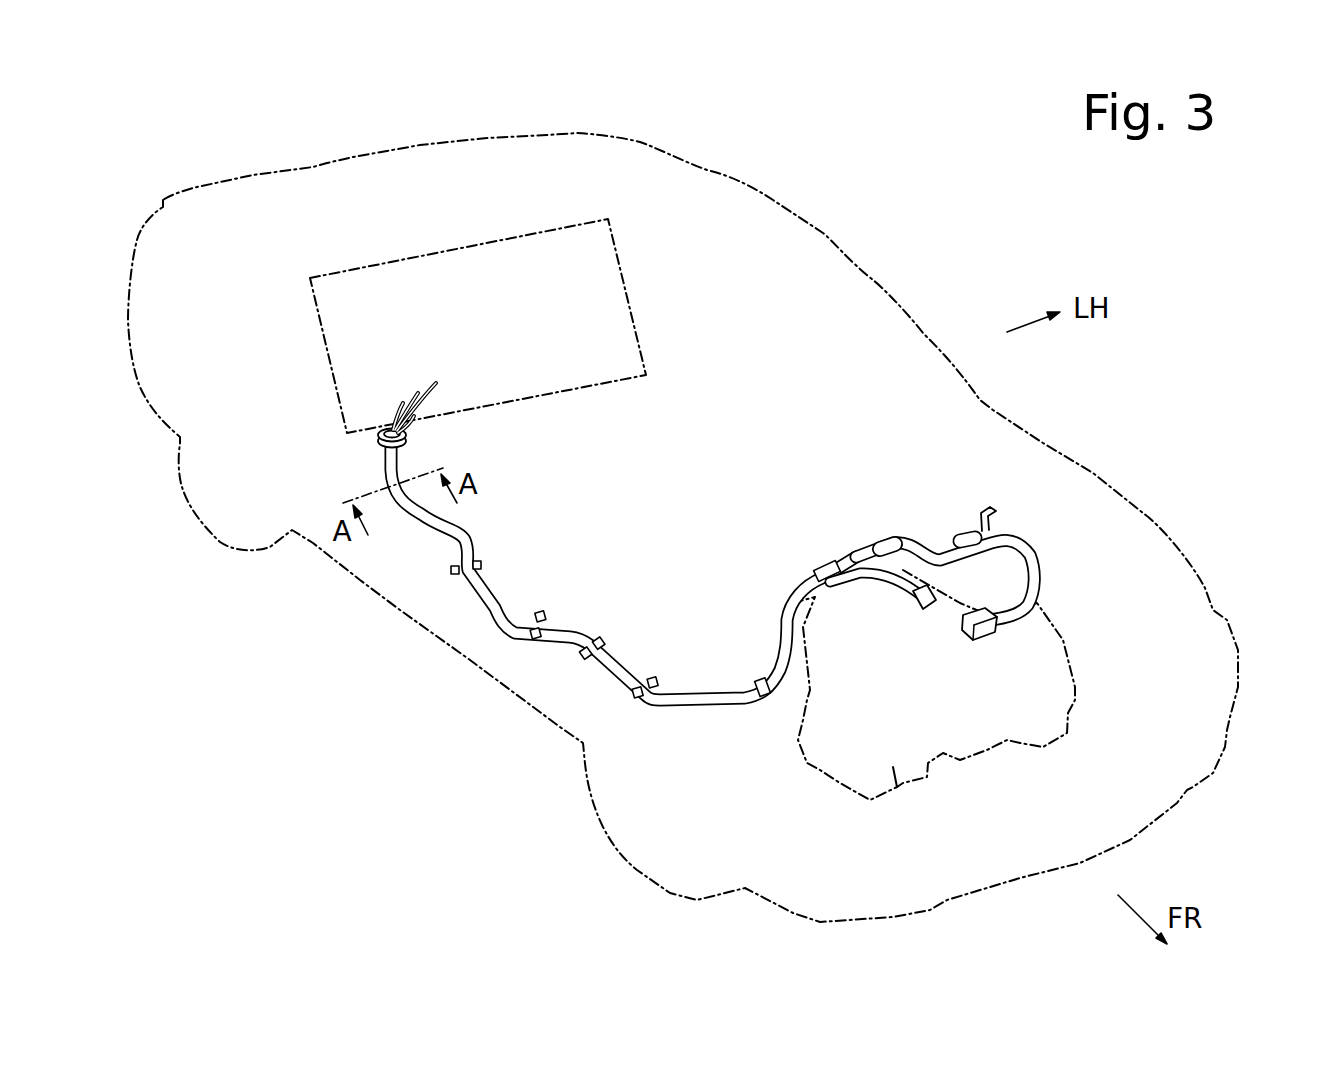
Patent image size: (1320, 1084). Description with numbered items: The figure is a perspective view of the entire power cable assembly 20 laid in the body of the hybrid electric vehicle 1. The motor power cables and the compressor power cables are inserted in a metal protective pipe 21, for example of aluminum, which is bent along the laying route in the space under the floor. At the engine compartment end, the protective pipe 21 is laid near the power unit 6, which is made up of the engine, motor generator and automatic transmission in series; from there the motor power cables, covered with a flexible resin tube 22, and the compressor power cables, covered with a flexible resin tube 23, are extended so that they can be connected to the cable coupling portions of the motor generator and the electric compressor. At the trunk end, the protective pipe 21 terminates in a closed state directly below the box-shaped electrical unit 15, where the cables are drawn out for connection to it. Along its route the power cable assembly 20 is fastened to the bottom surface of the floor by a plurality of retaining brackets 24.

The hybrid electric vehicle 1 is at (852, 206).
The electrical unit 15 is at (552, 226).
The power unit 6 is at (1068, 636).
The power cable assembly 20 is at (702, 582).
The protective pipe 21 is at (493, 600).
The flexible resin tube 22 is at (937, 537).
The flexible resin tube 23 is at (893, 577).
The retaining bracket 24 is at (455, 570).